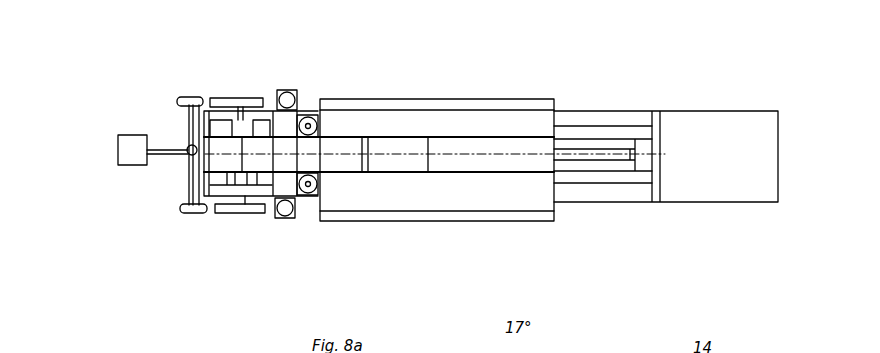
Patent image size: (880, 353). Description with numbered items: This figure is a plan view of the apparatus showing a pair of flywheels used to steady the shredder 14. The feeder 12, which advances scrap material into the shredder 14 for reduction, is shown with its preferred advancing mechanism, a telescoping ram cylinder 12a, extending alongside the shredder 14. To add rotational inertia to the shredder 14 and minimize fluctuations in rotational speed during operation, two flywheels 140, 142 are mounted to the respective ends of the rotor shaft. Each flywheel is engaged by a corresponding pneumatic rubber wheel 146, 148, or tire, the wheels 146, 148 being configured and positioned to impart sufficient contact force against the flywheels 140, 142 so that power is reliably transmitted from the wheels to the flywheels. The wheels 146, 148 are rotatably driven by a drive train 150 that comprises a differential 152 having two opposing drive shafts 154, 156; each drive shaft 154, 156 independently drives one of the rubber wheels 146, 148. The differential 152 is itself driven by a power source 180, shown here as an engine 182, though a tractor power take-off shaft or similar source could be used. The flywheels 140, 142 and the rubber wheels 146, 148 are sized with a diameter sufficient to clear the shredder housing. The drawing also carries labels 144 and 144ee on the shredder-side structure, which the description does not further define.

The feeder 12 is at (488, 136).
The telescoping ram cylinder 12a is at (403, 152).
The shredder 14 is at (318, 148).
The flywheel 140 is at (220, 97).
The flywheel 142 is at (246, 214).
The frame 144 is at (330, 134).
The rollers 144ee is at (280, 165).
The pneumatic rubber wheel 146 is at (199, 96).
The pneumatic rubber wheel 148 is at (185, 213).
The drive train 150 is at (156, 180).
The differential 152 is at (188, 146).
The drive shaft 154 is at (189, 145).
The drive shaft 156 is at (177, 182).
The power source 180 is at (280, 124).
The engine 182 is at (117, 147).